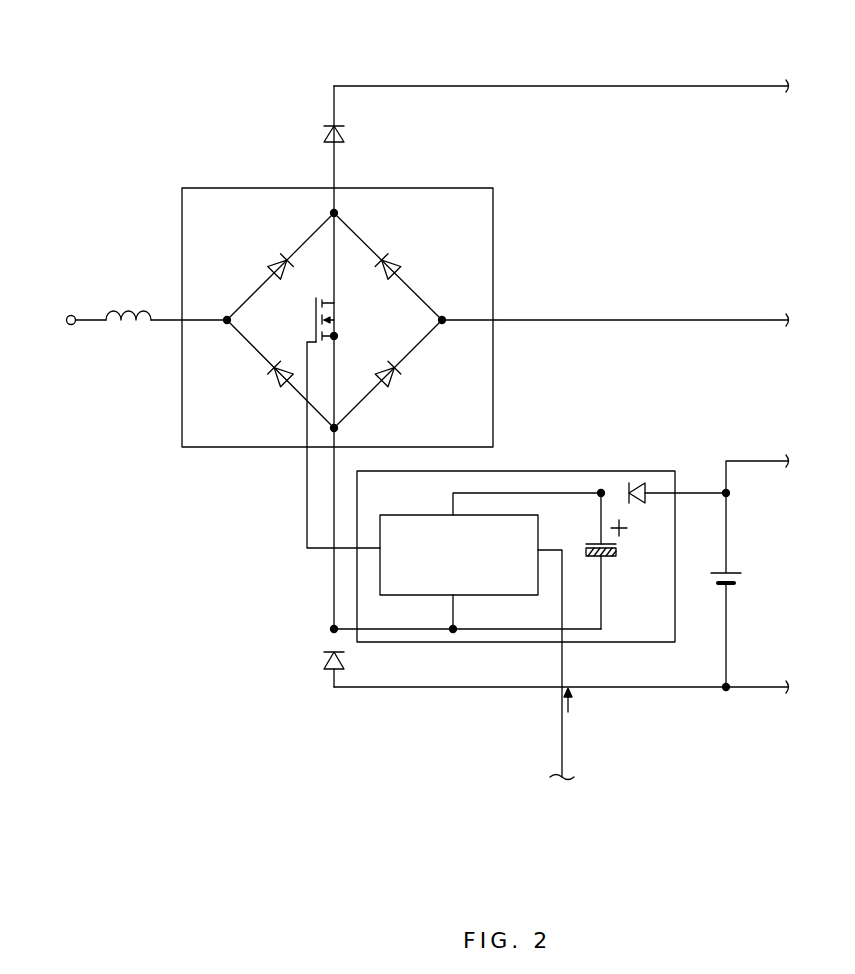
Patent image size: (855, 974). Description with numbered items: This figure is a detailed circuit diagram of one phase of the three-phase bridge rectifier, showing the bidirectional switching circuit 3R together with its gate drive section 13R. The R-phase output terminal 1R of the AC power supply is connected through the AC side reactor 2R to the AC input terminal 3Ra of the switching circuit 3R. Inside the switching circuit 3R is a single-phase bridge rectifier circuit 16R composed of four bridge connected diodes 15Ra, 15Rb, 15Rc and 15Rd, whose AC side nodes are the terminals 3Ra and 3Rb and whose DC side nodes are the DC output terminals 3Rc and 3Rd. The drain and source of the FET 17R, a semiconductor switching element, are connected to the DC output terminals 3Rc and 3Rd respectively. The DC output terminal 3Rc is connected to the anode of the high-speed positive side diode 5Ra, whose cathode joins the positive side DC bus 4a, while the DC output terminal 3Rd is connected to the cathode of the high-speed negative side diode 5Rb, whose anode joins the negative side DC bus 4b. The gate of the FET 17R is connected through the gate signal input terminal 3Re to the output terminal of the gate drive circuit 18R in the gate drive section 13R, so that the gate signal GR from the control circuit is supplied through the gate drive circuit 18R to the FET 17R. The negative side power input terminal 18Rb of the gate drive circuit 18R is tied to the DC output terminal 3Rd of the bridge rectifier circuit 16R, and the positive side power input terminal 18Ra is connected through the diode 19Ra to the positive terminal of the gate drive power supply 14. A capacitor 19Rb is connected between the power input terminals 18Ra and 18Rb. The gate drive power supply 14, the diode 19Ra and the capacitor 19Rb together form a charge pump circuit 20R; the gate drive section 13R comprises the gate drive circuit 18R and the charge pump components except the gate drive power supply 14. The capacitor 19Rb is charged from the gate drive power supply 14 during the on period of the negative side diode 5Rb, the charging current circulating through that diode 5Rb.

The output terminal 1R is at (69, 316).
The reactor 2R is at (120, 326).
The bidirectional switching circuit 3R is at (493, 198).
The AC input terminal 3Ra is at (226, 322).
The AC input terminal 3Rb is at (444, 318).
The DC output terminal 3Rc is at (333, 211).
The DC output terminal 3Rd is at (336, 428).
The gate signal input terminal 3Re is at (306, 448).
The positive side DC bus 4a is at (519, 86).
The negative side DC bus 4b is at (656, 690).
The positive side diode 5Ra is at (350, 131).
The negative side diode 5Rb is at (348, 656).
The gate drive section 13R is at (588, 471).
The gate drive power supply 14 is at (743, 583).
The single-phase bridge connected diode 15Ra is at (272, 258).
The single-phase bridge connected diode 15Rb is at (270, 376).
The single-phase bridge connected diode 15Rc is at (397, 258).
The single-phase bridge connected diode 15Rd is at (396, 378).
The single-phase bridge rectifier circuit 16R is at (430, 278).
The FET 17R is at (338, 310).
The gate drive circuit 18R is at (540, 538).
The positive side power input terminal 18Ra is at (450, 514).
The negative side power input terminal 18Rb is at (457, 597).
The diode 19Ra is at (637, 480).
The capacitor 19Rb is at (625, 552).
The charge pump circuit 20R is at (680, 558).
The gate signal GR is at (583, 716).